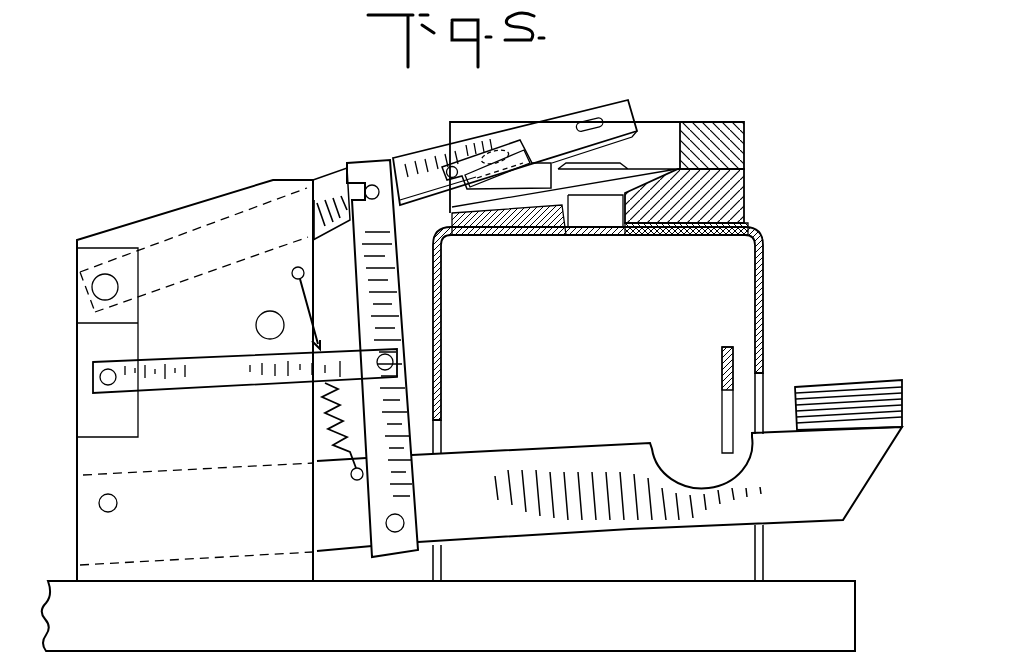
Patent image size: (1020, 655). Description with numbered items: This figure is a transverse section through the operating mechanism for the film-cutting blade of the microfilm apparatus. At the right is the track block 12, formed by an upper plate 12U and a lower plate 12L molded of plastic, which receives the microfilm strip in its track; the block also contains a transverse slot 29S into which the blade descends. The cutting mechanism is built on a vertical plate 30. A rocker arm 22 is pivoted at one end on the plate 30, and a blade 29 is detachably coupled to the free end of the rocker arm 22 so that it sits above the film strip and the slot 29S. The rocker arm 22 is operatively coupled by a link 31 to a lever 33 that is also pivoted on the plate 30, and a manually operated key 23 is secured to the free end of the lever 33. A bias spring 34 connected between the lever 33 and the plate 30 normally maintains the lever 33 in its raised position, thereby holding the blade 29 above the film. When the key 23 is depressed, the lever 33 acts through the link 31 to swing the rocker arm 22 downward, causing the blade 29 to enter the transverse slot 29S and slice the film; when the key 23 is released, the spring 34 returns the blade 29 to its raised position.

The track block 12 is at (627, 324).
The upper plate 12U is at (742, 138).
The lower plate 12L is at (742, 196).
The rocker arm 22 is at (333, 188).
The key 23 is at (846, 387).
The blade 29 is at (626, 105).
The transverse slot 29S is at (533, 183).
The vertical plate 30 is at (290, 185).
The link 31 is at (393, 246).
The lever 33 is at (594, 452).
The bias spring 34 is at (332, 419).